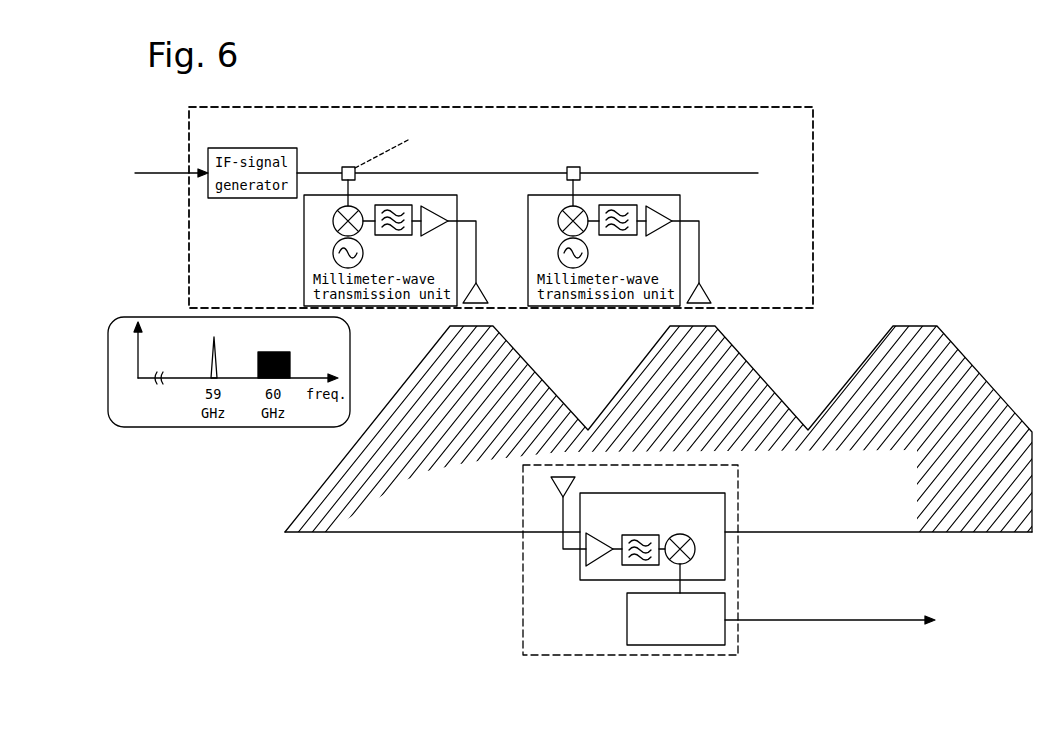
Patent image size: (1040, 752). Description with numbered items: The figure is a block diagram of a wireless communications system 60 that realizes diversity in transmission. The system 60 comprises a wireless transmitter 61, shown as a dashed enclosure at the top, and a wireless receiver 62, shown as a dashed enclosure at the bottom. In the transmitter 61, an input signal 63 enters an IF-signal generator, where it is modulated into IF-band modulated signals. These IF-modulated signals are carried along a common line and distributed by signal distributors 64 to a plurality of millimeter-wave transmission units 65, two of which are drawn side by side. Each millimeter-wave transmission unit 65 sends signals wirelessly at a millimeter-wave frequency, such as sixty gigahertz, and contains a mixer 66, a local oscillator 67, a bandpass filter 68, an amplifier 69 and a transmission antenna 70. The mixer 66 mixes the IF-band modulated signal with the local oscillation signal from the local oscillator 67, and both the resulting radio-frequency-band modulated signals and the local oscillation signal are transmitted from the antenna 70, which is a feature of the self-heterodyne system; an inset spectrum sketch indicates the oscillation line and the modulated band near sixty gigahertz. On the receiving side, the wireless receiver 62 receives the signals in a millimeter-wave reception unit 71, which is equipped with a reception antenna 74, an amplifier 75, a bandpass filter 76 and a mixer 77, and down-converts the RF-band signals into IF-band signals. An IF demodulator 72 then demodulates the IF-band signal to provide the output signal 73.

The wireless communications system 60 is at (716, 91).
The wireless transmitter 61 is at (572, 105).
The wireless receiver 62 is at (740, 588).
The input signal 63 is at (102, 152).
The signal distributor 64 is at (348, 167).
The millimeter-wave transmission unit 65 is at (407, 173).
The mixer 66 is at (337, 207).
The local oscillator 67 is at (334, 262).
The bandpass filter 68 is at (395, 206).
The amplifier 69 is at (447, 195).
The transmission antenna 70 is at (488, 297).
The millimeter-wave reception unit 71 is at (726, 558).
The IF demodulator 72 is at (725, 633).
The output signal 73 is at (982, 638).
The reception antenna 74 is at (553, 487).
The amplifier 75 is at (597, 561).
The bandpass filter 76 is at (632, 566).
The mixer 77 is at (673, 562).